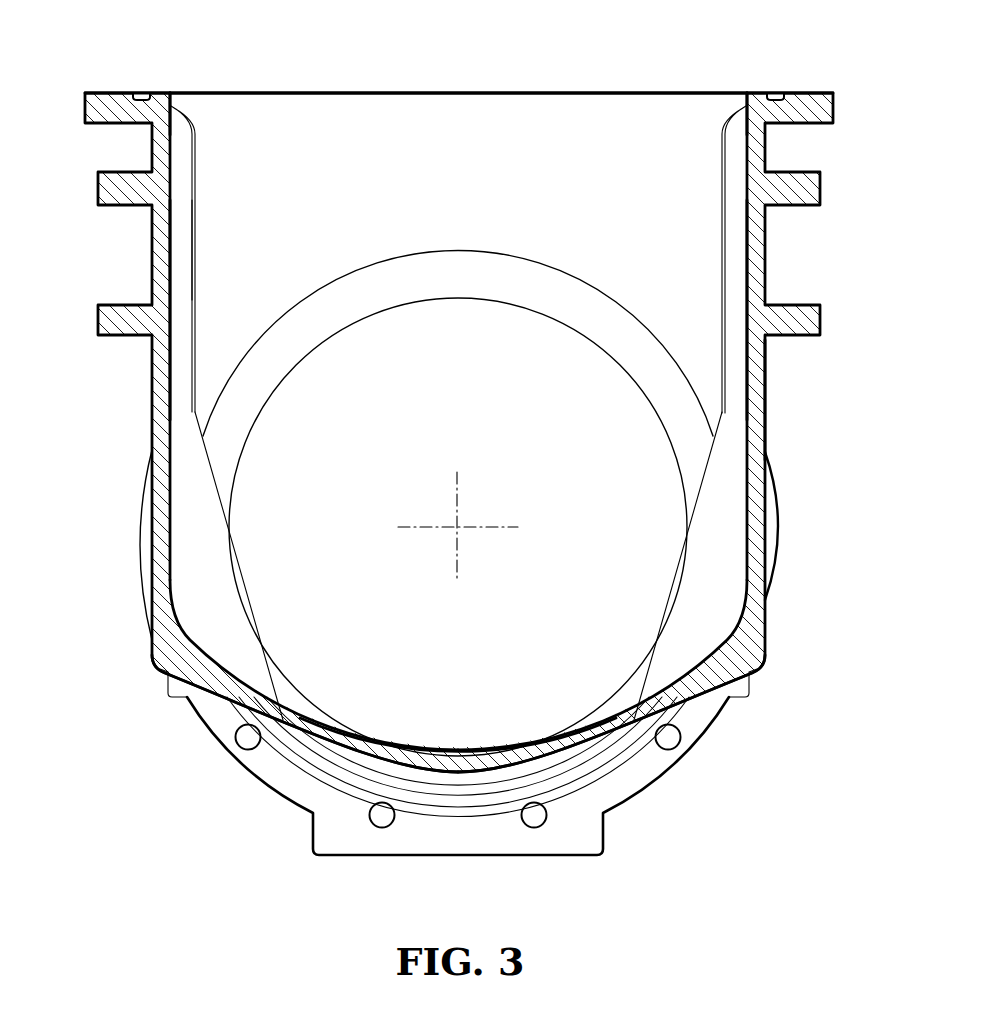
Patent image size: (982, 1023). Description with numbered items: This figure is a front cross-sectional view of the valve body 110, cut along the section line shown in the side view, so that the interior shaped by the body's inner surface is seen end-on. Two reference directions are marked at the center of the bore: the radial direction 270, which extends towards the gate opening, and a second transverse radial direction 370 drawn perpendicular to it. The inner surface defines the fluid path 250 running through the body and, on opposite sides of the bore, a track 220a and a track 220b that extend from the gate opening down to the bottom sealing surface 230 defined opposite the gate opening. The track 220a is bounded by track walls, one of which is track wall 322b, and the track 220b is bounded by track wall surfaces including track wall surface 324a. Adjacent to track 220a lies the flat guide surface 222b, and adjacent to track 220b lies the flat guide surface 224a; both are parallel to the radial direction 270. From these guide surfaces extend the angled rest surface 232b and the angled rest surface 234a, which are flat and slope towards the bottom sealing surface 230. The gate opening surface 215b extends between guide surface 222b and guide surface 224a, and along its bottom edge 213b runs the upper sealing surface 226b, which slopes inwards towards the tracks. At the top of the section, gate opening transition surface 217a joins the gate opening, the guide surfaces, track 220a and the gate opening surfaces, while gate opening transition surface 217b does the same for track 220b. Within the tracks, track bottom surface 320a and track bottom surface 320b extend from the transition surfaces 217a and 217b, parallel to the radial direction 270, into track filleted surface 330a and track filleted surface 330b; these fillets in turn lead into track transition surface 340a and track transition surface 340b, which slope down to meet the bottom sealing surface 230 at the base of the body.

The valve body 110 is at (145, 656).
The bottom edge 213b is at (520, 256).
The gate opening surface 215b is at (402, 149).
The gate opening transition surface 217a is at (173, 102).
The gate opening transition surface 217b is at (745, 104).
The track 220a is at (170, 407).
The track 220b is at (740, 285).
The guide surface 222b is at (201, 171).
The guide surface 224a is at (714, 207).
The upper sealing surface 226b is at (390, 306).
The bottom sealing surface 230 is at (470, 753).
The angled rest surface 232b is at (213, 483).
The angled rest surface 234a is at (696, 512).
The fluid path 250 is at (205, 720).
The radial direction 270 is at (458, 505).
The track bottom surface 320a is at (179, 264).
The track bottom surface 320b is at (738, 252).
The track wall 322b is at (183, 237).
The track wall surface 324a is at (745, 380).
The track filleted surface 330a is at (194, 628).
The track filleted surface 330b is at (712, 643).
The track transition surface 340a is at (262, 682).
The track transition surface 340b is at (649, 691).
The second transverse radial direction 370 is at (457, 540).